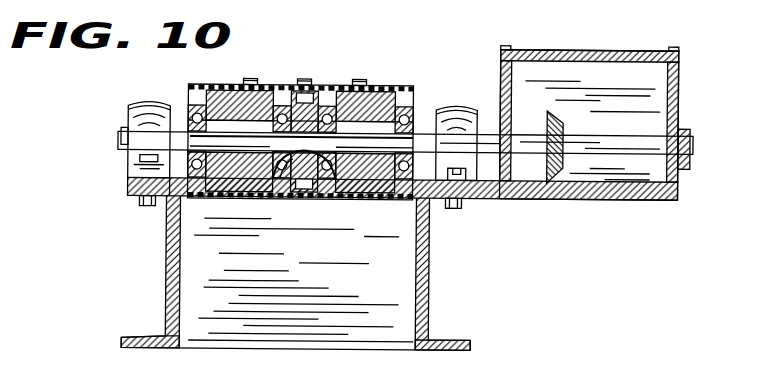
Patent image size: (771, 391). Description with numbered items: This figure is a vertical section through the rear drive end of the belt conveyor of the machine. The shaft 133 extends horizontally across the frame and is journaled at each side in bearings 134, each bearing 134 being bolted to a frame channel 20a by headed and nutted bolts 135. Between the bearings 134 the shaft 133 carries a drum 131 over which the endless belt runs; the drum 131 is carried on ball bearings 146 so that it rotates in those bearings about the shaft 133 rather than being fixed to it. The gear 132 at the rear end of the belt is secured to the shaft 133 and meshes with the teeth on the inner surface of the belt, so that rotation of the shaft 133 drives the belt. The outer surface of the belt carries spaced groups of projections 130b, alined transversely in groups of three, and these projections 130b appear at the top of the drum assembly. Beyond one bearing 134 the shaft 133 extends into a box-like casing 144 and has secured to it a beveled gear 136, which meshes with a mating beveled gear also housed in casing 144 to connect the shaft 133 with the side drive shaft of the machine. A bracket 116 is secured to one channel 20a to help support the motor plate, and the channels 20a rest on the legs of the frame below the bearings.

The channel 20a is at (167, 226).
The bracket 116 is at (128, 188).
The projections 130b is at (250, 77).
The drum 131 is at (188, 100).
The gear 132 is at (295, 198).
The shaft 133 is at (694, 141).
The bearing 134 is at (140, 146).
The headed and nutted bolt 135 is at (142, 207).
The beveled gear 136 is at (563, 122).
The box-like casing 144 is at (680, 82).
The ball bearing 146 is at (414, 102).